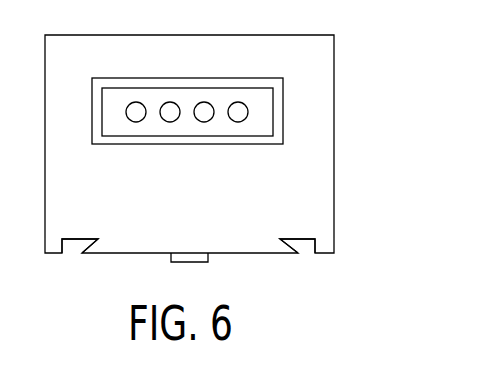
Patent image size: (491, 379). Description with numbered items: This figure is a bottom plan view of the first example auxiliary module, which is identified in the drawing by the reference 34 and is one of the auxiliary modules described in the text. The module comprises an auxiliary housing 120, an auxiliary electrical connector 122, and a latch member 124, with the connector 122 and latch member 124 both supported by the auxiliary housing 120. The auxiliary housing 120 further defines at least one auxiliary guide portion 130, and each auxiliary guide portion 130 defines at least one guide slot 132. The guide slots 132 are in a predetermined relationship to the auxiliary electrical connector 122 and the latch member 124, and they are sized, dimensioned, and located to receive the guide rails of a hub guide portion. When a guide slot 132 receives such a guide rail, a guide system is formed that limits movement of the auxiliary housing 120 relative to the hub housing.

The module 34 is at (349, 31).
The auxiliary housing 120 is at (343, 134).
The auxiliary electrical connector 122 is at (190, 257).
The latch member 124 is at (136, 155).
The auxiliary guide portion 130 is at (70, 258).
The guide slot 132 is at (305, 250).